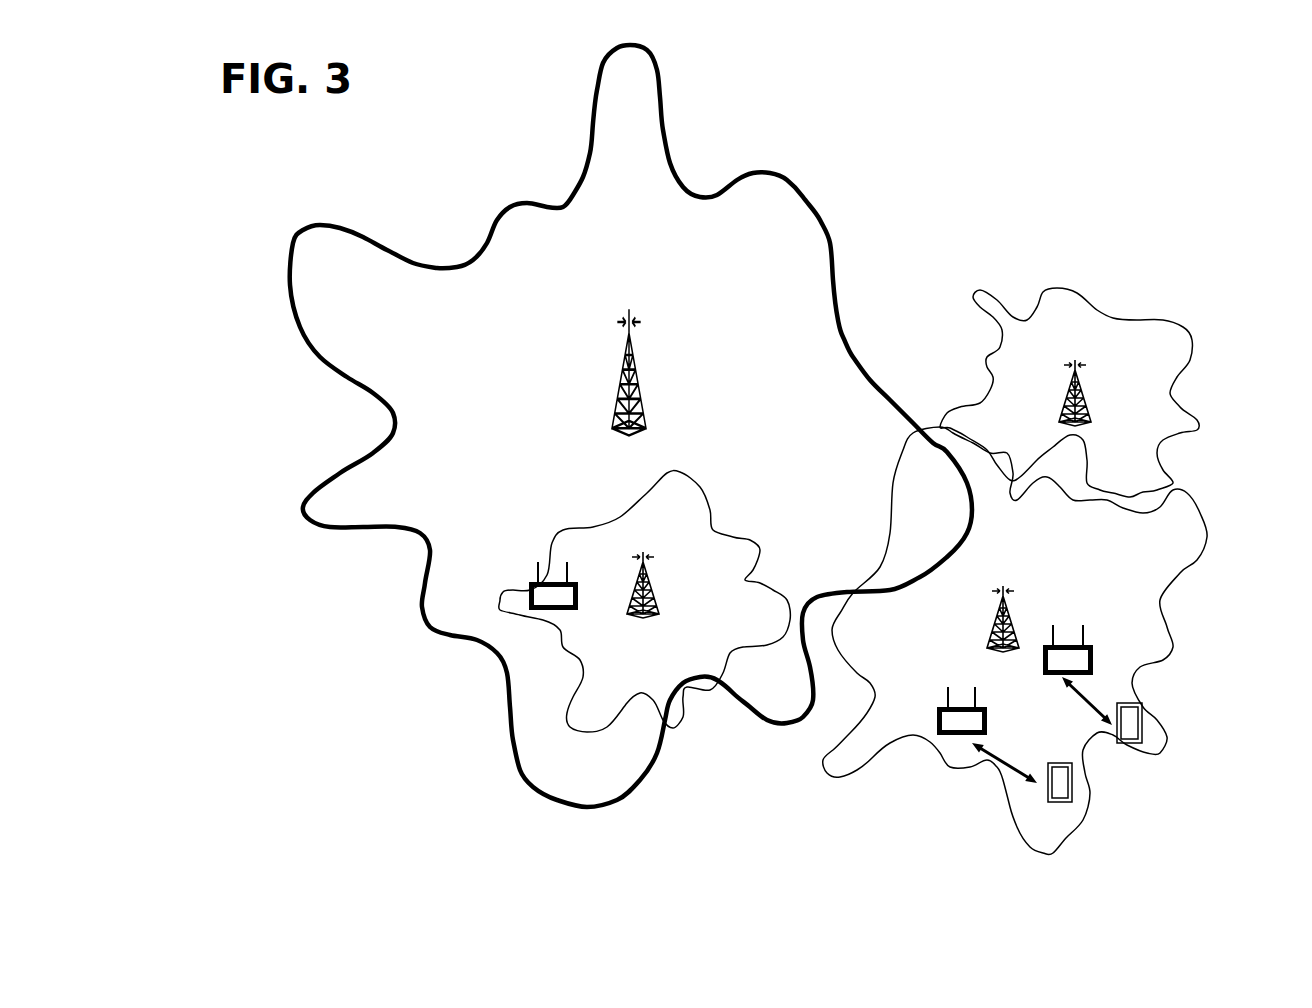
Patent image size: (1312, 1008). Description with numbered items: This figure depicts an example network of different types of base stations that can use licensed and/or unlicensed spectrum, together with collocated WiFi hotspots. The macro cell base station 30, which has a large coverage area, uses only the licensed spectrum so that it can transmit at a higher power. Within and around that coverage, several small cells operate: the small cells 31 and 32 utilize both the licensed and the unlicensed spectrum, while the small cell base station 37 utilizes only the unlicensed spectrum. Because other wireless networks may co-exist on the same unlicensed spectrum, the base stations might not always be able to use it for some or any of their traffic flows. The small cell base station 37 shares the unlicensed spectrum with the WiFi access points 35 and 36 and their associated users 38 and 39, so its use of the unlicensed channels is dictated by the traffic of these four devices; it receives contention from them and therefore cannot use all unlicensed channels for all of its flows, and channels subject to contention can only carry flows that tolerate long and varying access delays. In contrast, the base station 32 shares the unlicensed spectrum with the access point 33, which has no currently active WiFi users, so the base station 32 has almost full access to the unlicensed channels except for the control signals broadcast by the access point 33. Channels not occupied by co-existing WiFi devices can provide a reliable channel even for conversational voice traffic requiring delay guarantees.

The macro cell base station 30 is at (657, 362).
The small cell 31 is at (1087, 403).
The small cell base station 32 is at (657, 607).
The WiFi access point 33 is at (525, 585).
The WiFi access point 35 is at (1127, 642).
The WiFi access point 36 is at (927, 712).
The small cell base station 37 is at (980, 607).
The WiFi user 38 is at (1053, 805).
The WiFi user 39 is at (1147, 720).